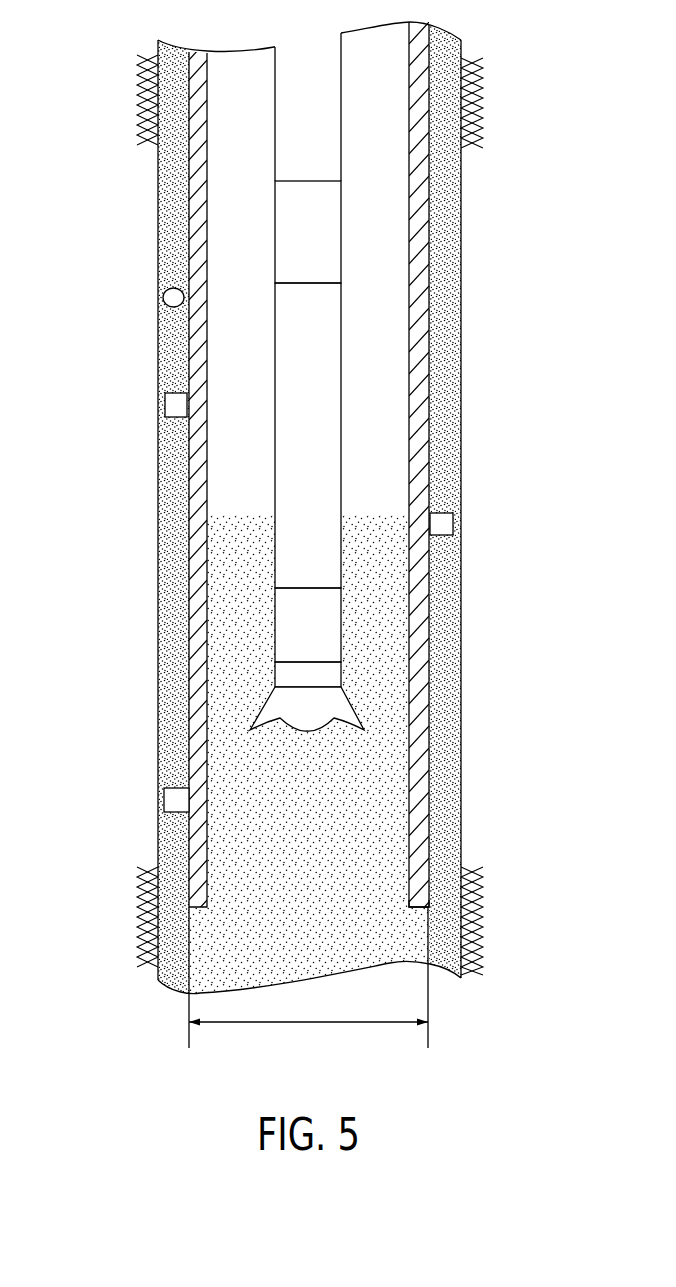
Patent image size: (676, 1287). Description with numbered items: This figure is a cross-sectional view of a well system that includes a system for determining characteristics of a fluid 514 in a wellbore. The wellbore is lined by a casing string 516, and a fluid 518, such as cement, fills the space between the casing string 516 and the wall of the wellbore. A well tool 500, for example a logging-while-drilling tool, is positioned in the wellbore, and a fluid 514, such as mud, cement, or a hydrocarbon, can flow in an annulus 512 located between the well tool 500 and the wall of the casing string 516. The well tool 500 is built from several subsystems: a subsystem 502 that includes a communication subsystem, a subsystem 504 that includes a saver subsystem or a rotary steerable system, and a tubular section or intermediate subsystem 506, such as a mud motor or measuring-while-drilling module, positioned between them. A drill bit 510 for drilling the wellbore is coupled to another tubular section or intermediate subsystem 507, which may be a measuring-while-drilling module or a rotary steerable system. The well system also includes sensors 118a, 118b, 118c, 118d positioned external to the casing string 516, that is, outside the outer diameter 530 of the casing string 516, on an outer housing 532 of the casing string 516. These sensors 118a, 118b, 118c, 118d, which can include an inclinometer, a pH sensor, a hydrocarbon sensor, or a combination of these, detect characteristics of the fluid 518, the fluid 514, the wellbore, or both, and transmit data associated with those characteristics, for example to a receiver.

The well tool 500 is at (274, 128).
The subsystem 502 is at (333, 199).
The subsystem 504 is at (333, 625).
The intermediate subsystem 506 is at (290, 371).
The intermediate subsystem 507 is at (333, 672).
The drill bit 510 is at (332, 730).
The annulus 512 is at (222, 226).
The fluid 514 is at (395, 837).
The casing string 516 is at (423, 425).
The fluid 518 is at (447, 583).
The outer diameter 530 is at (307, 1023).
The outer housing 532 is at (430, 875).
The sensor 118a is at (158, 800).
The sensor 118b is at (456, 524).
The sensor 118c is at (158, 404).
The sensor 118d is at (158, 297).